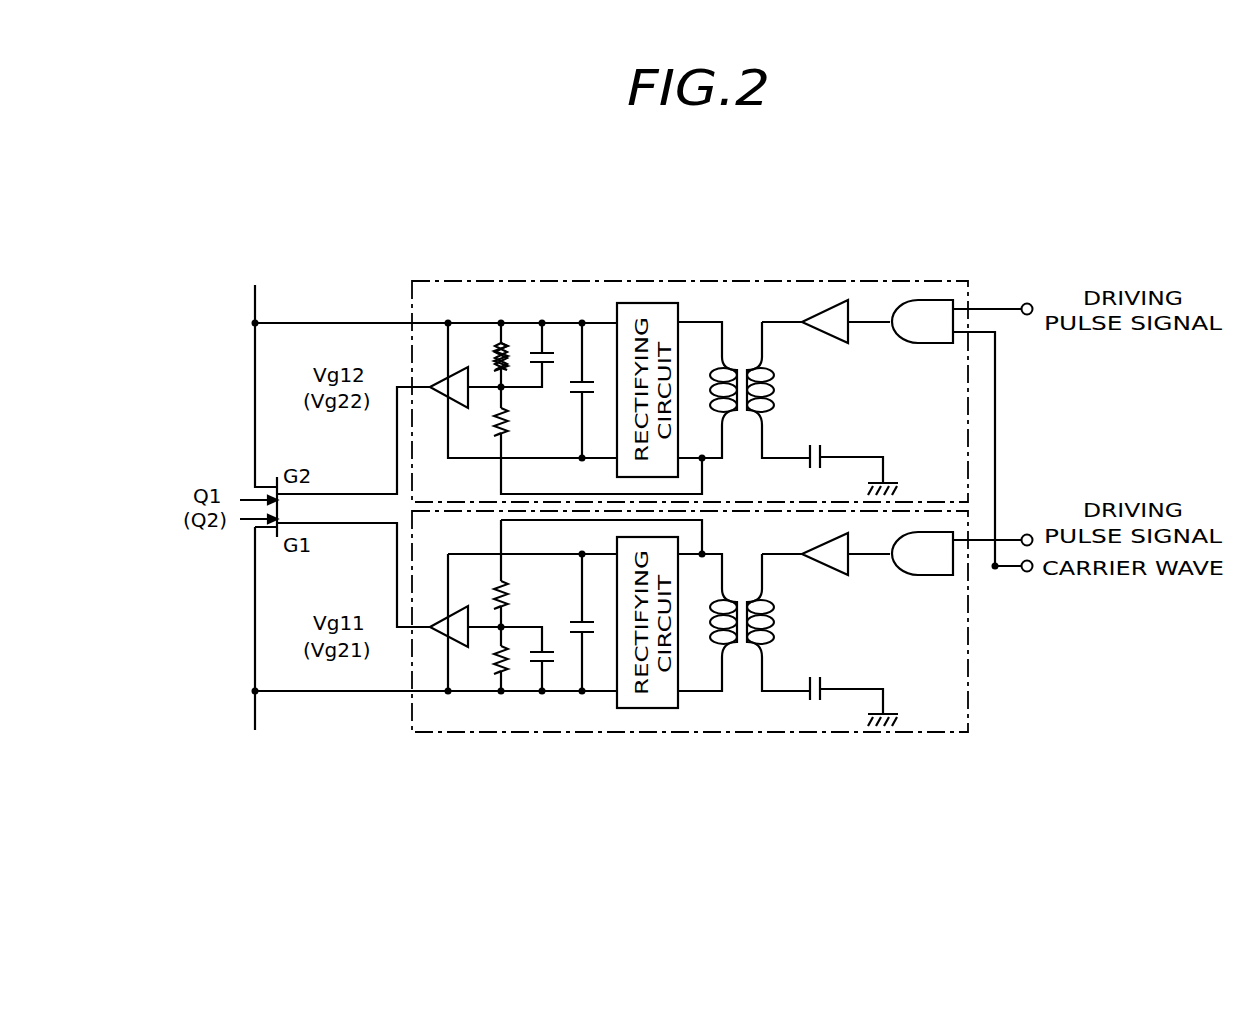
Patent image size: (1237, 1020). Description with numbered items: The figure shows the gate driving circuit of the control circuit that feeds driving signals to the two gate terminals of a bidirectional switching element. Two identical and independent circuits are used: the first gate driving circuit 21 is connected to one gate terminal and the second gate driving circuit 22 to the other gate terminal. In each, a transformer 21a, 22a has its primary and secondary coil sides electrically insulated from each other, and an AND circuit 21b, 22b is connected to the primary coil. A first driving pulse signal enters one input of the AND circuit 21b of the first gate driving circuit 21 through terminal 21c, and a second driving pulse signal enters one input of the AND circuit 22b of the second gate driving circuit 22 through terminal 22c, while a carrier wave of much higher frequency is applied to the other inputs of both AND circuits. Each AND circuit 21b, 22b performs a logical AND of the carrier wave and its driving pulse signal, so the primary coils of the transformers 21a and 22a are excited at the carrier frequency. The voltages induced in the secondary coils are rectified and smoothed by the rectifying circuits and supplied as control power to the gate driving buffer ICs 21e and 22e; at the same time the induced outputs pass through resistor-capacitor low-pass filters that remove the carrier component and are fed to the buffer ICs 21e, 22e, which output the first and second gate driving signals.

The first gate driving circuit 21 is at (657, 733).
The transformer 21a is at (743, 680).
The AND circuit 21b is at (929, 568).
The terminal 21c is at (1020, 532).
The gate driving buffer IC 21e is at (462, 642).
The second gate driving circuit 22 is at (587, 280).
The transformer 22a is at (738, 330).
The AND circuit 22b is at (921, 300).
The terminal 22c is at (1028, 316).
The gate driving buffer IC 22e is at (455, 378).